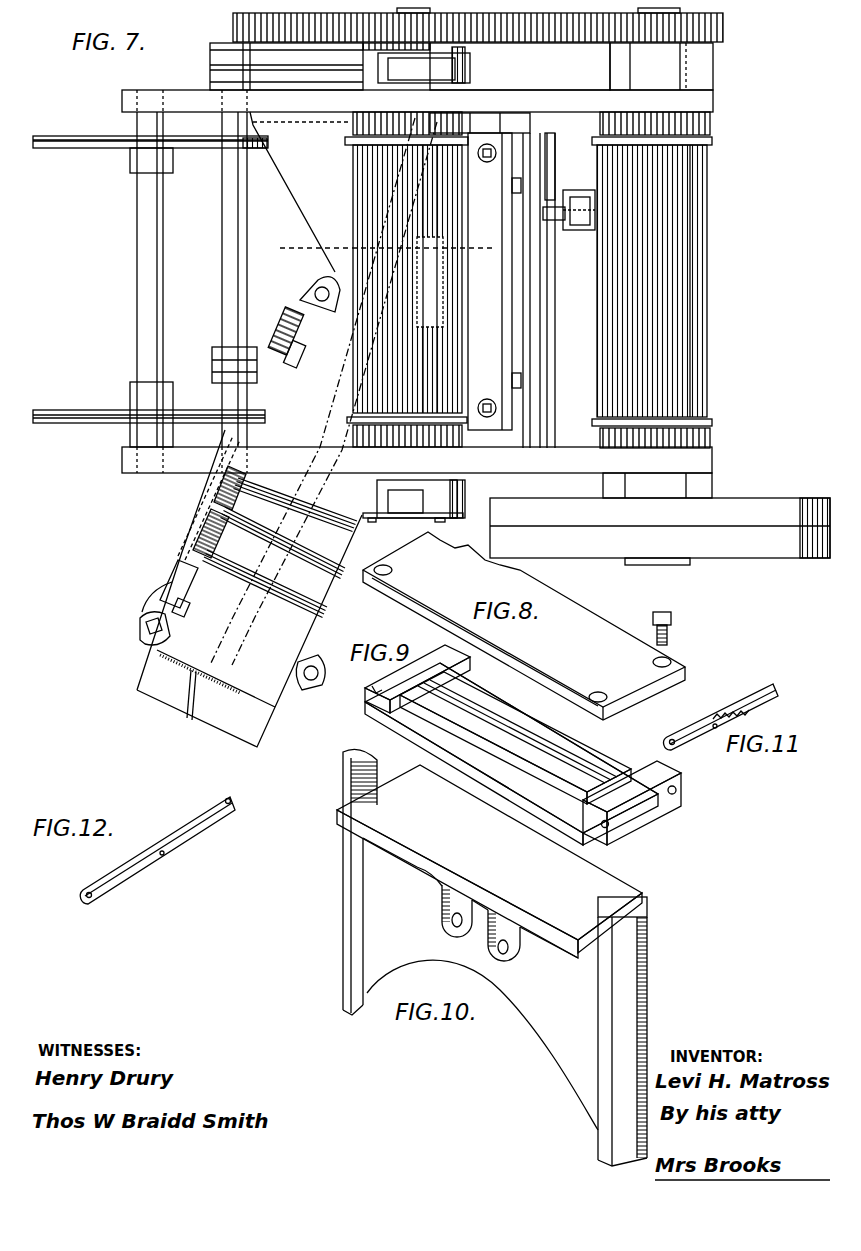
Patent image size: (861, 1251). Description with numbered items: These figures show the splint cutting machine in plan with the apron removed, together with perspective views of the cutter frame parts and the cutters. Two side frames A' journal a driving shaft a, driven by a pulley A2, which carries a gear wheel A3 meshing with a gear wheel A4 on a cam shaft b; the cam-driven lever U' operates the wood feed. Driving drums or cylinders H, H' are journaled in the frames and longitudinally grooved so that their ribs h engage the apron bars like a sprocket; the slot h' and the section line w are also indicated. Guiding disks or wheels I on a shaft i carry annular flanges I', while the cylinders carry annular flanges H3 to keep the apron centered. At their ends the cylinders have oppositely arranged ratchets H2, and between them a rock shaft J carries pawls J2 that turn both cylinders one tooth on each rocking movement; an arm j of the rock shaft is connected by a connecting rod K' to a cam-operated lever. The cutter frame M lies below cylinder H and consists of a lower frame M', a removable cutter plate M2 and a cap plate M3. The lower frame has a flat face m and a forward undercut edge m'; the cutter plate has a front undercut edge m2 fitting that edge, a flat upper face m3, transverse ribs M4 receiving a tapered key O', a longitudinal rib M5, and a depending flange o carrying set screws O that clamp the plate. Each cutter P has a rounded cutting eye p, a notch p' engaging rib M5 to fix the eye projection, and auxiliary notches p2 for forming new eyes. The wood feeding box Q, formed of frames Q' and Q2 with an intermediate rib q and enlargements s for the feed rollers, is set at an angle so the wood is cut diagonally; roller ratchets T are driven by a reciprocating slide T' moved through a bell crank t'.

In FIG. 7, the upper gear block U' is at (458, 49).
In FIG. 7, the cam shaft b is at (429, 64).
In FIG. 7, the gear wheel A4 is at (487, 68).
In FIG. 7, the gear wheel A3 is at (715, 45).
In FIG. 7, the side frames A' is at (417, 288).
In FIG. 7, the pulley A2 is at (748, 558).
In FIG. 7, the driving shaft a is at (665, 560).
In FIG. 7, the shaft i is at (137, 247).
In FIG. 7, the guiding disks or wheels I is at (150, 279).
In FIG. 7, the annular flanges I' is at (150, 283).
In FIG. 7, the bell crank t' is at (264, 345).
In FIG. 7, the driving drum or cylinder H is at (418, 279).
In FIG. 7, the drum slot h' is at (454, 279).
In FIG. 7, the section line w is at (382, 248).
In FIG. 7, the ratchets H2 is at (727, 438).
In FIG. 7, the annular flanges H3 is at (710, 422).
In FIG. 7, the driving drum or cylinder H' is at (675, 281).
In FIG. 7, the ribs h is at (651, 281).
In FIG. 7, the cutter frame M is at (499, 290).
In FIG. 7, the pawls J2 is at (484, 125).
In FIG. 7, the rock shaft J is at (553, 347).
In FIG. 7, the connecting rod K' is at (579, 204).
In FIG. 7, the arm j is at (560, 222).
In FIG. 7, the frame Q' is at (249, 588).
In FIG. 7, the enlargements s is at (280, 548).
In FIG. 7, the internal intermediate rib q is at (205, 693).
In FIG. 7, the frame Q2 is at (148, 678).
In FIG. 7, the wood feeding box Q is at (144, 583).
In FIG. 7, the ratchets T is at (197, 498).
In FIG. 7, the reciprocating slide T' is at (161, 588).
In FIG. 8, the cap plate M3 is at (524, 626).
In FIG. 9, the cutter plate M2 is at (511, 754).
In FIG. 9, the transverse ribs M4 is at (698, 778).
In FIG. 9, the longitudinal rib M5 is at (515, 738).
In FIG. 9, the tapered key O' is at (517, 730).
In FIG. 9, the flat upper face m3 is at (549, 728).
In FIG. 9, the set screws O is at (692, 802).
In FIG. 9, the front undercut edge m2 is at (615, 836).
In FIG. 10, the forward undercut edge m' is at (342, 882).
In FIG. 10, the flat face m is at (489, 861).
In FIG. 10, the lower frame M' is at (505, 1002).
In FIG. 10, the depending flange or lug o is at (481, 923).
In FIG. 11, the cutter P is at (721, 717).
In FIG. 12, the cutter P is at (157, 850).
In FIG. 11, the rounded cutting eyes p is at (667, 728).
In FIG. 12, the rounded cutting eyes p is at (148, 846).
In FIG. 11, the notch p' is at (709, 745).
In FIG. 12, the notch p' is at (172, 862).
In FIG. 11, the auxiliary notches or lugs p2 is at (750, 716).